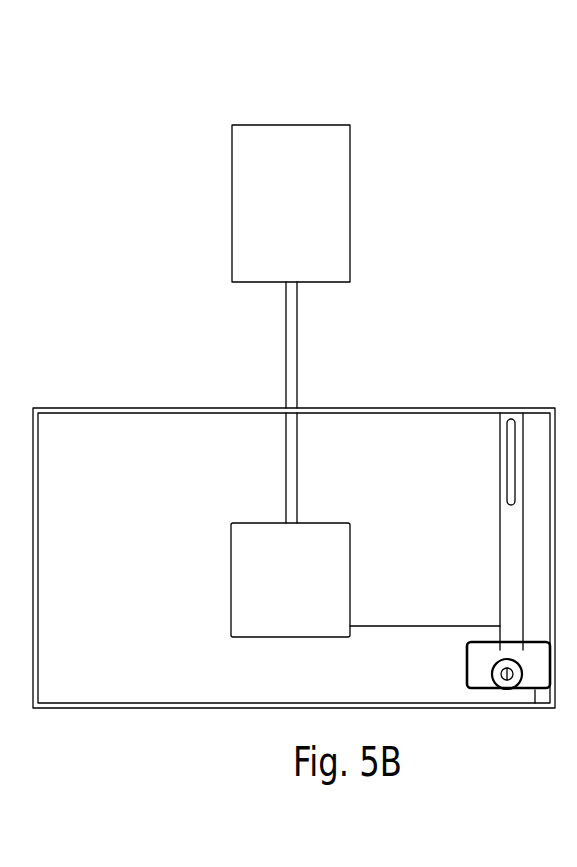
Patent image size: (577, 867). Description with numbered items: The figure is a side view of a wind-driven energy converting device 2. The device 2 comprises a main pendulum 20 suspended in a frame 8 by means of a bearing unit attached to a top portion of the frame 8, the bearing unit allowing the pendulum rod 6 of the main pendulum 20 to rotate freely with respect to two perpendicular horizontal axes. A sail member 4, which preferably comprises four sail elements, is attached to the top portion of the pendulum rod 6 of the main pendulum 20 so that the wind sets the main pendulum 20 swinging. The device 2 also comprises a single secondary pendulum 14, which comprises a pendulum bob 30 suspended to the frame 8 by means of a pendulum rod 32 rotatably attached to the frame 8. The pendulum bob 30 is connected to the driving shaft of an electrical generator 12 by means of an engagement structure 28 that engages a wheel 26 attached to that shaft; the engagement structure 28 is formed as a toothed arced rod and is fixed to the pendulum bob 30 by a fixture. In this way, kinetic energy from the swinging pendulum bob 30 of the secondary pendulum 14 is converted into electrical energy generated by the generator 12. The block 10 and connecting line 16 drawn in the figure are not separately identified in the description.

The wind-driven energy converting device 2 is at (138, 187).
The sail member 4 is at (226, 133).
The pendulum rod 6 is at (286, 455).
The frame 8 is at (75, 408).
The rotor unit 10 is at (231, 590).
The electrical generator 12 is at (498, 690).
The secondary pendulum 14 is at (461, 520).
The connecting arm 16 is at (373, 625).
The main pendulum 20 is at (266, 360).
The wheel 26 is at (492, 675).
The engagement structure 28 is at (538, 690).
The pendulum bob 30 is at (500, 598).
The pendulum rod 32 is at (500, 455).